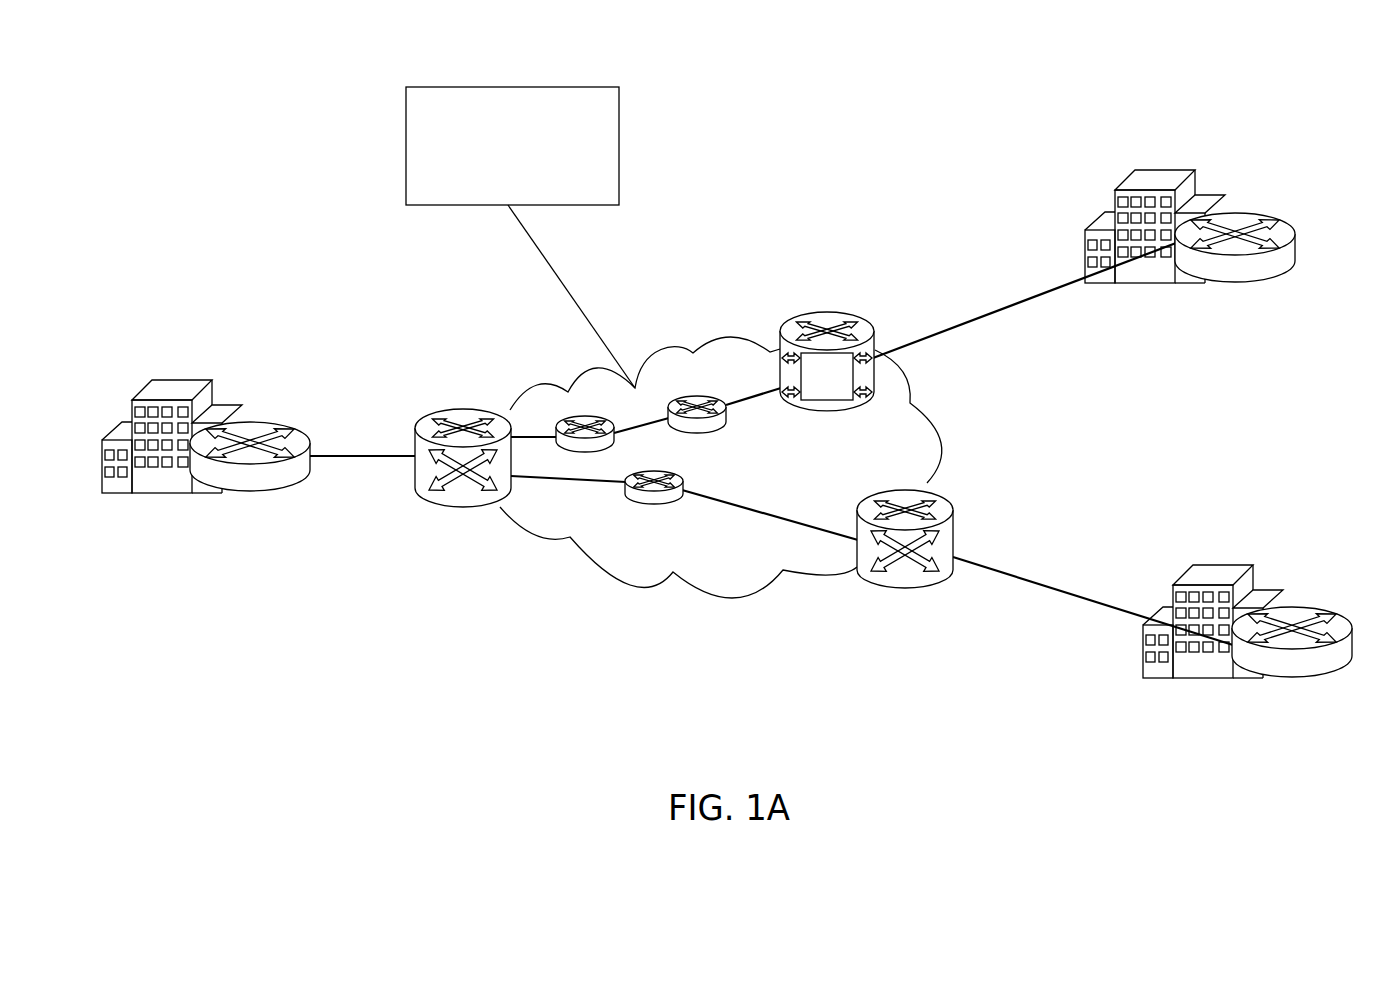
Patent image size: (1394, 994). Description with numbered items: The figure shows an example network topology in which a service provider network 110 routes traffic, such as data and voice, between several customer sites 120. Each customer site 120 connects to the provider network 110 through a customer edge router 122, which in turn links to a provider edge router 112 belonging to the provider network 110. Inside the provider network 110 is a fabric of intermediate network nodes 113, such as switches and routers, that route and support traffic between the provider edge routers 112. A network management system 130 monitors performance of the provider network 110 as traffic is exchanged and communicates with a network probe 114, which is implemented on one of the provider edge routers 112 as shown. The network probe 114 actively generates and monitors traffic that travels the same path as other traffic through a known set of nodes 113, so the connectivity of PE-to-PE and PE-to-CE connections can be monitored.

The service provider network 110 is at (910, 403).
The provider edge (PE) router 112 is at (422, 497).
The intermediate network node 113 is at (568, 412).
The network probe 114 is at (830, 388).
The customer site 120 is at (96, 405).
The customer edge (CE) router 122 is at (257, 492).
The network management system 130 is at (620, 139).